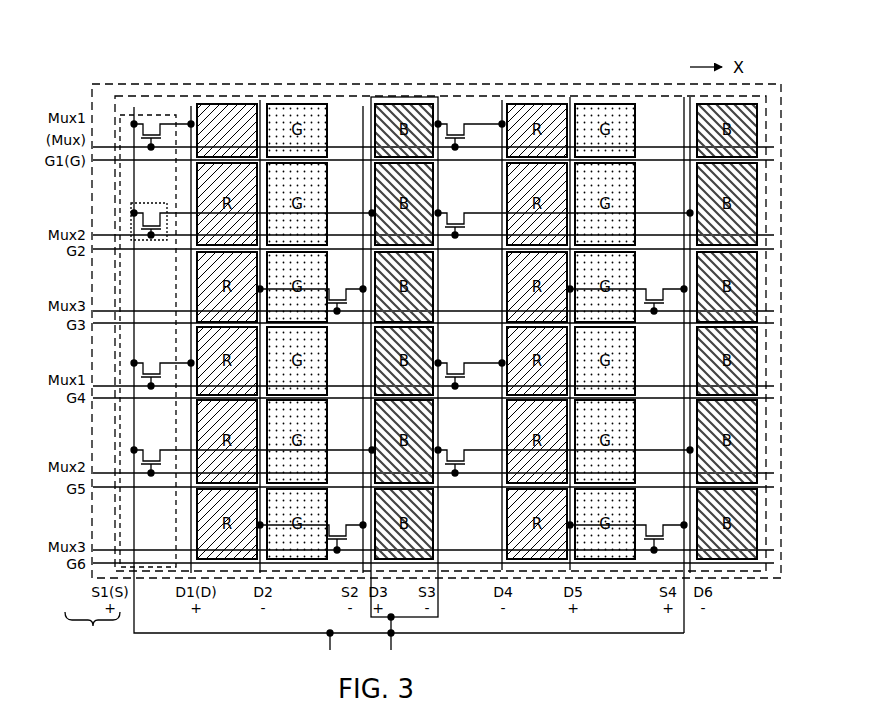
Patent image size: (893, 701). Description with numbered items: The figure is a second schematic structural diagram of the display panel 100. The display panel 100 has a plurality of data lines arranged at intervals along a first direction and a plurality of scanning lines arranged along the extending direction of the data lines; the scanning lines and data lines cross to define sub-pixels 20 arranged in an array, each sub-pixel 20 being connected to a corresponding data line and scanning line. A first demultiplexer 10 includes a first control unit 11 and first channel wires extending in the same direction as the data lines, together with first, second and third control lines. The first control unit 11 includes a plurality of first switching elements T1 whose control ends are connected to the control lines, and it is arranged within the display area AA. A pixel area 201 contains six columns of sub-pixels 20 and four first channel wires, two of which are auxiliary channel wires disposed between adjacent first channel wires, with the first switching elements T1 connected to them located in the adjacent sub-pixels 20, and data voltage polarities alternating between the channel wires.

The display panel 100 is at (145, 57).
The sub-pixel 20 is at (226, 104).
The pixel area 201 is at (459, 96).
The display area AA is at (361, 96).
The first switching element T1 is at (129, 212).
The first control unit 11 is at (119, 553).
The first demultiplexer 10 is at (374, 377).